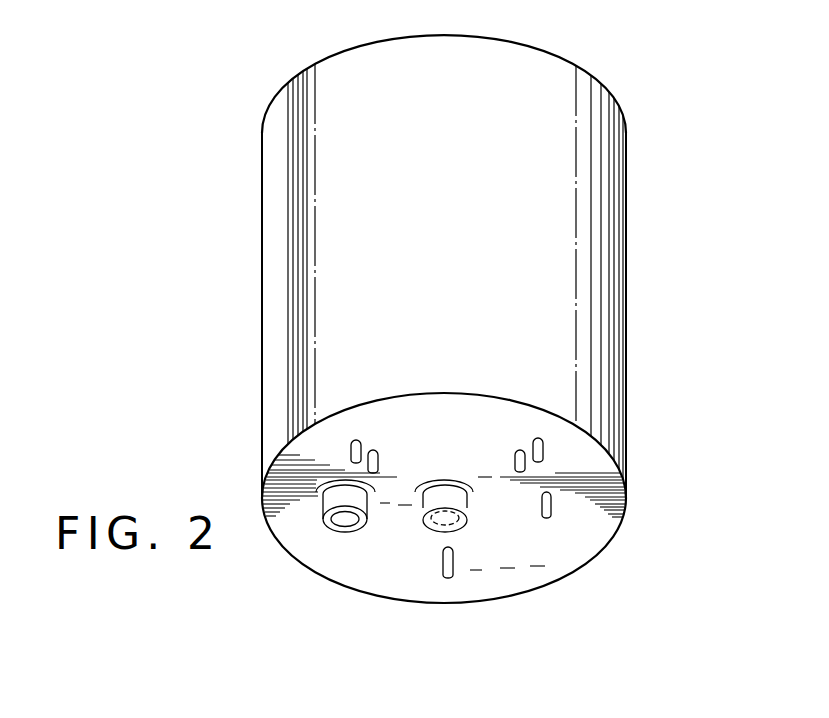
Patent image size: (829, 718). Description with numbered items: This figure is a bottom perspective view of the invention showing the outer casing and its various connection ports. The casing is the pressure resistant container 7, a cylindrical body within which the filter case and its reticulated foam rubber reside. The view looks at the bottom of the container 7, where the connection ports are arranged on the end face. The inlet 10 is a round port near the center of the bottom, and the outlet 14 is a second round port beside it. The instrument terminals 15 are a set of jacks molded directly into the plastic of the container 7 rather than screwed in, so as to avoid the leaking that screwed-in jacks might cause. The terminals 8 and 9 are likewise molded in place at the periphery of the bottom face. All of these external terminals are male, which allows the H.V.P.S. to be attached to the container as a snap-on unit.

The pressure resistant container 7 is at (602, 290).
The terminal 8 is at (552, 506).
The terminal 9 is at (443, 557).
The inlet 10 is at (462, 500).
The outlet 14 is at (322, 508).
The instrument terminals 15 is at (525, 445).